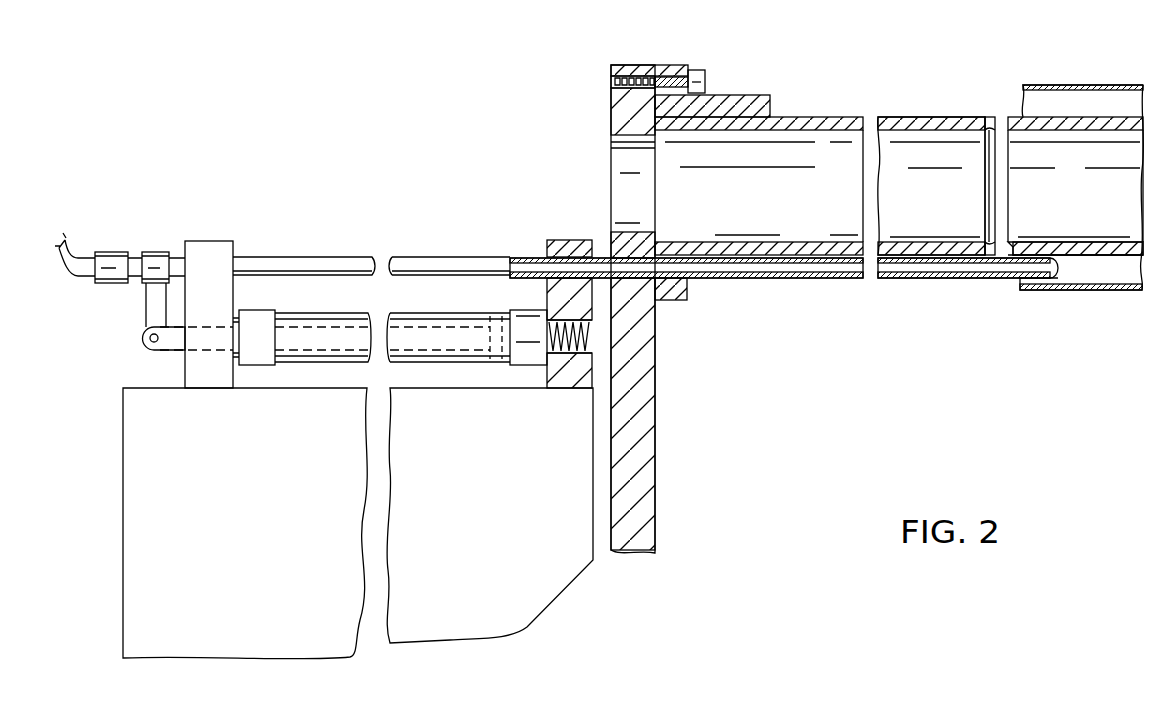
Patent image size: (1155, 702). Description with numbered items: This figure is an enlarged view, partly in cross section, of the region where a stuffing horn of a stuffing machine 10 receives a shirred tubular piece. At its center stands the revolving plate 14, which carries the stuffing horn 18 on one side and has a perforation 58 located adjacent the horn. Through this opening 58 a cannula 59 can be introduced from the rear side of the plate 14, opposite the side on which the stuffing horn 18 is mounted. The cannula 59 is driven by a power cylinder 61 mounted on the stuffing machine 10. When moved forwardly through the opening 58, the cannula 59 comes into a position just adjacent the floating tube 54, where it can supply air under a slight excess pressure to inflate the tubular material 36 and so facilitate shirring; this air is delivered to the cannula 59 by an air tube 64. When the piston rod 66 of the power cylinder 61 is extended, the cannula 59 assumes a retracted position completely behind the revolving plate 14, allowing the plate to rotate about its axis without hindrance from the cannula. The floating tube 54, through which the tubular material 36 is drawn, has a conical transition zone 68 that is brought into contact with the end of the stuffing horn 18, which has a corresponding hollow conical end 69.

The stuffing machine 10 is at (136, 428).
The revolving plate 14 is at (640, 460).
The stuffing horn 18 is at (797, 120).
The tubular material 36 is at (1137, 279).
The floating tube 54 is at (1097, 252).
The perforation 58 is at (612, 251).
The cannula 59 is at (821, 281).
The power cylinder 61 is at (318, 318).
The air tube 64 is at (84, 245).
The piston rod 66 is at (175, 338).
The conical transition zone 68 is at (1016, 121).
The hollow conical end 69 is at (983, 133).